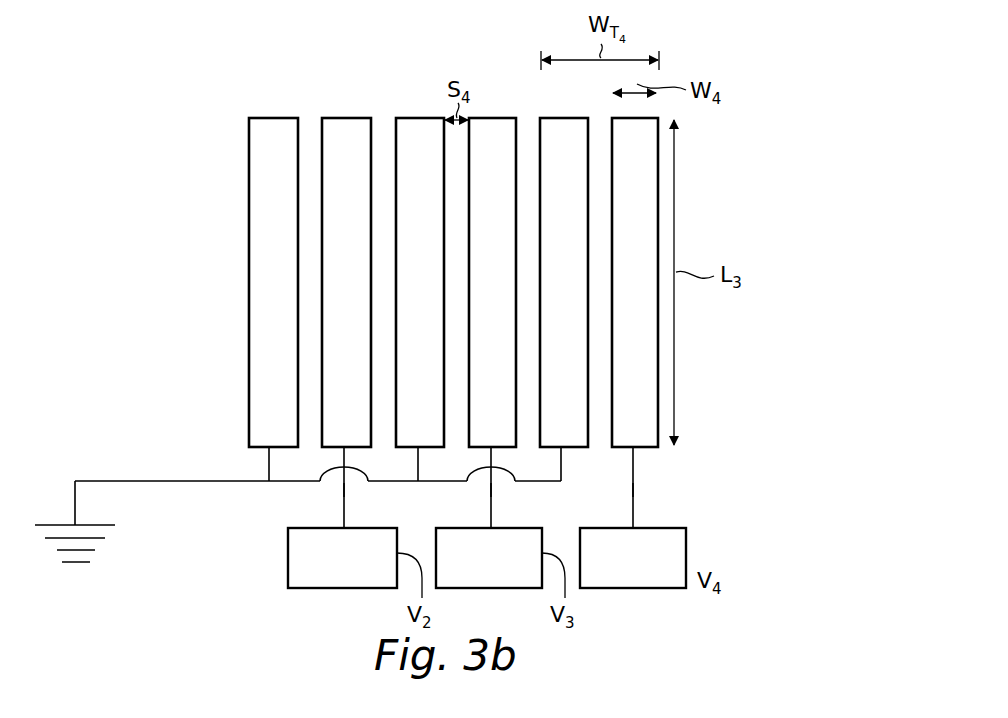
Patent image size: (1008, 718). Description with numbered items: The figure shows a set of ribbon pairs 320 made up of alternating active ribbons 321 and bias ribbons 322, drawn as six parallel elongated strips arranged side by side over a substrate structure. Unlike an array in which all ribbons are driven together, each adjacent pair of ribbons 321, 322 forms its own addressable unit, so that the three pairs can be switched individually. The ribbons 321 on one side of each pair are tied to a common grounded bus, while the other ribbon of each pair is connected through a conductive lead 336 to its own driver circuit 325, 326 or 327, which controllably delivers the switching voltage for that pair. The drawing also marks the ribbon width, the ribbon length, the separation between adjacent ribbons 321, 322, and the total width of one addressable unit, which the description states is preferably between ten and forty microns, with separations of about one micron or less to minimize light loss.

The set of ribbon pairs 320 is at (160, 89).
The active ribbon 321 is at (271, 118).
The bias ribbon 322 is at (346, 118).
The driver circuit 325 is at (310, 588).
The driver circuit 326 is at (457, 588).
The driver circuit 327 is at (598, 588).
The conductive lead 336 is at (344, 497).